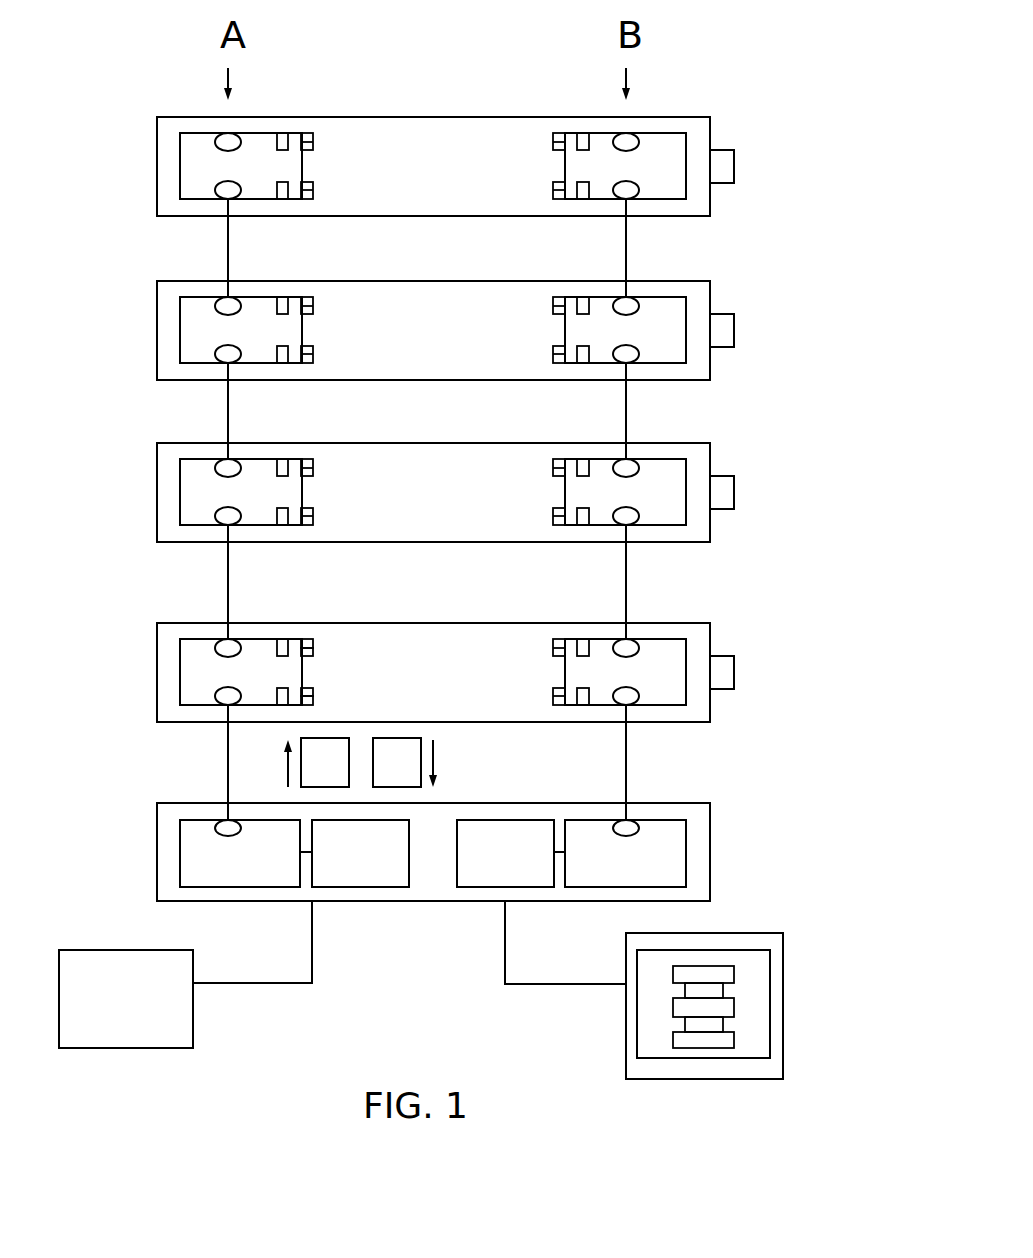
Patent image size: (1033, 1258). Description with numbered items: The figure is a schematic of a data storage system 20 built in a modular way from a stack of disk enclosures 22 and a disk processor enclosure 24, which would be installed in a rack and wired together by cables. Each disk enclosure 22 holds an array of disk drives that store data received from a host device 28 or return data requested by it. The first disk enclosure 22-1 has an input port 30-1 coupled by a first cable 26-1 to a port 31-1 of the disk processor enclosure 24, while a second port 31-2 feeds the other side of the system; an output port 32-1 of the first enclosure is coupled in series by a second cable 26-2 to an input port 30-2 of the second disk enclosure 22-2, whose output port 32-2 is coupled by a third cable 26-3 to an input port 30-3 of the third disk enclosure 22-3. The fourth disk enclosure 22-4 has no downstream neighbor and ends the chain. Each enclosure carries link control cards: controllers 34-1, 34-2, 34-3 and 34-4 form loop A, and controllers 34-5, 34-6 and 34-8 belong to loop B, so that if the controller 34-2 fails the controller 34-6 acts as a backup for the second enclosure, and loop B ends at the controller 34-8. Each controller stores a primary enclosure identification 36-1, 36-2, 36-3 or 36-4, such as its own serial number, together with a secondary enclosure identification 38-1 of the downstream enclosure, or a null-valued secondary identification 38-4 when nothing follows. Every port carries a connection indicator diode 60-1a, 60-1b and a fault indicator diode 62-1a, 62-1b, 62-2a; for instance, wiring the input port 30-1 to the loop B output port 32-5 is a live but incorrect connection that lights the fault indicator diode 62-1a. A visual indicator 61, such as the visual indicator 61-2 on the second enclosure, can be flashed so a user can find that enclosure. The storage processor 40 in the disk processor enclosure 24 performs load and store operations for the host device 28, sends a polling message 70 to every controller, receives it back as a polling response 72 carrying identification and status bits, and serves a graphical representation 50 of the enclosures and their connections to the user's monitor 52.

The data storage system 20 is at (472, 73).
The disk enclosure 22 is at (770, 321).
The first disk enclosure 22-1 is at (454, 660).
The second disk enclosure 22-2 is at (462, 483).
The third disk enclosure 22-3 is at (433, 320).
The fourth disk enclosure 22-4 is at (476, 139).
The disk processor enclosure 24 is at (466, 841).
The first cable 26-1 is at (228, 738).
The second cable 26-2 is at (227, 575).
The third cable 26-3 is at (227, 393).
The host device 28 is at (126, 999).
The input port 30-1 is at (215, 701).
The input port 30-2 is at (215, 521).
The input port 30-3 is at (215, 358).
The port 31-1 is at (226, 836).
The port 31-2 is at (624, 836).
The output port 32-1 is at (233, 643).
The output port 32-2 is at (233, 462).
The output port 32-5 is at (620, 642).
The controller 34-1 is at (262, 660).
The controller 34-2 is at (260, 493).
The controller 34-3 is at (235, 355).
The controller 34-4 is at (289, 138).
The controller 34-5 is at (669, 636).
The controller 34-6 is at (687, 475).
The controller 34-8 is at (686, 149).
The primary enclosure identification 36-1 is at (283, 707).
The primary enclosure identification 36-2 is at (278, 527).
The primary enclosure identification 36-3 is at (288, 345).
The primary enclosure identification 36-4 is at (288, 183).
The secondary enclosure identification 38-1 is at (288, 639).
The secondary enclosure identification 38-4 is at (289, 133).
The storage processor 40 is at (360, 853).
The graphical representation 50 is at (735, 978).
The monitor 52 is at (783, 955).
The connection indicator diode 60-1a is at (313, 700).
The connection indicator diode 60-1b is at (313, 650).
The visual indicator 61 is at (762, 673).
The visual indicator 61-2 is at (734, 493).
The fault indicator diode 62-1a is at (313, 692).
The fault indicator diode 62-1b is at (307, 638).
The fault indicator diode 62-2a is at (312, 513).
The polling message 70 is at (325, 762).
The polling response 72 is at (397, 762).